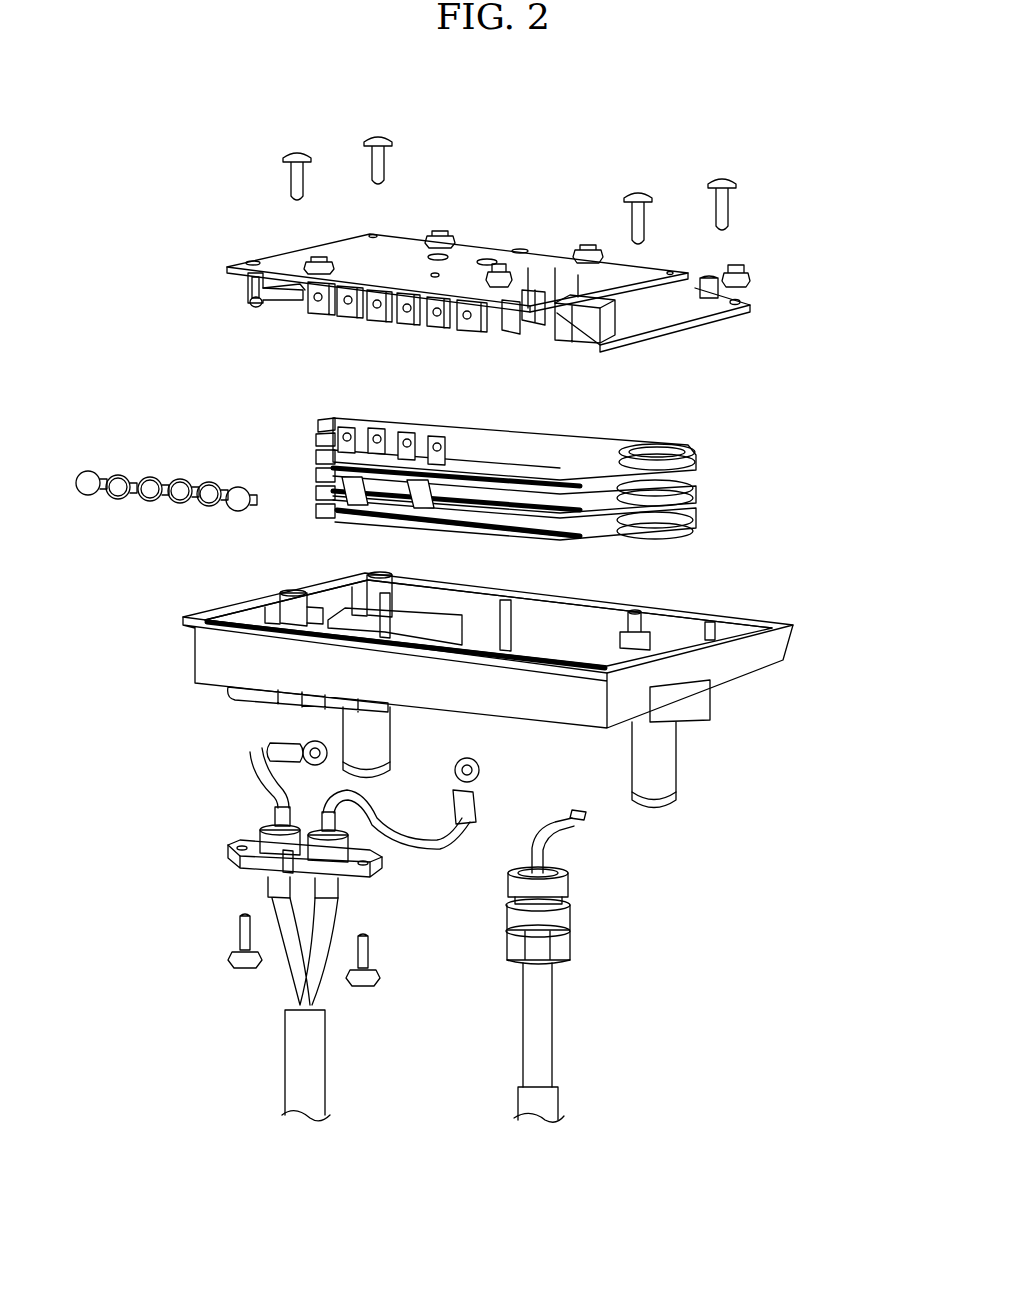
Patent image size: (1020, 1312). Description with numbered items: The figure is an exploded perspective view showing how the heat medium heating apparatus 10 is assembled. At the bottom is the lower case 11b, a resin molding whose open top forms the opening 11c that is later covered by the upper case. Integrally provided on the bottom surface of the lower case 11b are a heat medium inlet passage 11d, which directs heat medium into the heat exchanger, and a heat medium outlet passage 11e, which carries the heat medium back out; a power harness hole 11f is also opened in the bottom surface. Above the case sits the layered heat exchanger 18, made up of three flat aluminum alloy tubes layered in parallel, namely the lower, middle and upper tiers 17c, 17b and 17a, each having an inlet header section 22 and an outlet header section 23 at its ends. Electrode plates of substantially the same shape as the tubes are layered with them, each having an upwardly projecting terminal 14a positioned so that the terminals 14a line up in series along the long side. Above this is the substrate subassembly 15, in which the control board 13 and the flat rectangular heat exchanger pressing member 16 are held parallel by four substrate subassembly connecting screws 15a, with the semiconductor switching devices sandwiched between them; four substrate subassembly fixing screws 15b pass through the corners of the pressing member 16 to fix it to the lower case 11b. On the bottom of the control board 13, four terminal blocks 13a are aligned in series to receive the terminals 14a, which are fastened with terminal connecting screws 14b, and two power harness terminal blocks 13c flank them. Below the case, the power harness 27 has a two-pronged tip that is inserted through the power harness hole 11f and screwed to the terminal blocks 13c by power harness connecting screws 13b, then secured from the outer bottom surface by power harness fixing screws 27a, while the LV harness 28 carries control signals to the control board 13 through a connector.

The heat medium heating apparatus 10 is at (812, 124).
The lower case 11b is at (752, 668).
The opening 11c is at (246, 604).
The heat medium inlet passage 11d is at (392, 735).
The heat medium outlet passage 11e is at (682, 777).
The power harness hole 11f is at (238, 702).
The control board 13 is at (475, 250).
The terminal block 13a is at (440, 332).
The power harness connecting screw 13b is at (86, 470).
The power harness terminal block 13c is at (305, 306).
The terminal 14a is at (437, 435).
The terminal connecting screw 14b is at (142, 505).
The substrate subassembly 15 is at (236, 268).
The substrate subassembly connecting screw 15a is at (312, 258).
The substrate subassembly fixing screw 15b is at (290, 153).
The heat exchanger pressing member 16 is at (720, 322).
The upper tier flat heat exchanger tube 17a is at (628, 434).
The middle tier flat heat exchanger tube 17b is at (703, 491).
The lower tier flat heat exchanger tube 17c is at (703, 526).
The layered heat exchanger 18 is at (540, 532).
The inlet header section 22 is at (320, 425).
The outlet header section 23 is at (668, 460).
The power harness 27 is at (327, 1068).
The power harness fixing screw 27a is at (230, 962).
The LV harness 28 is at (553, 1029).